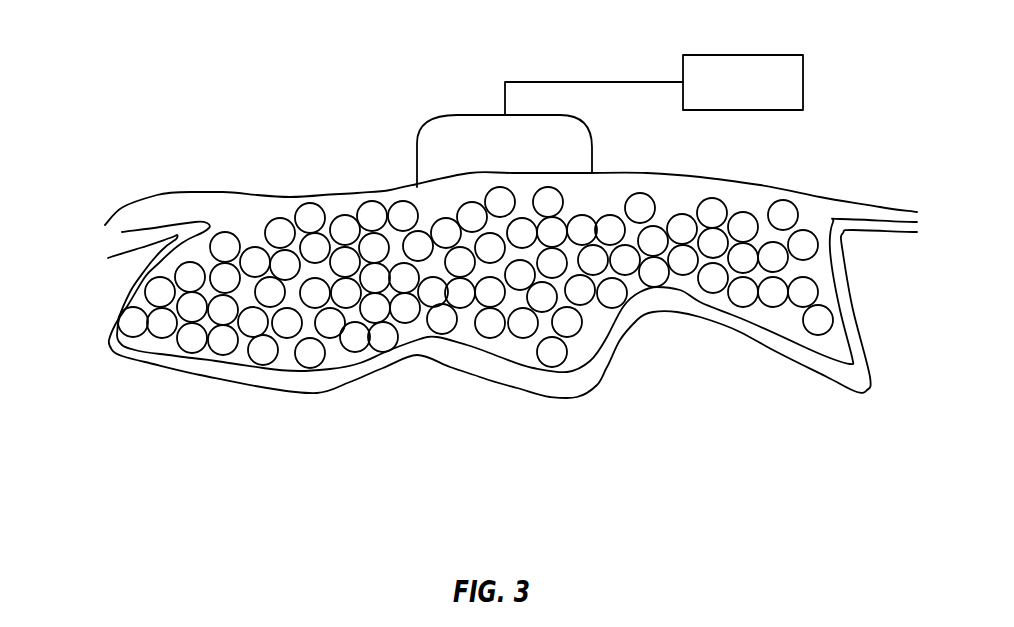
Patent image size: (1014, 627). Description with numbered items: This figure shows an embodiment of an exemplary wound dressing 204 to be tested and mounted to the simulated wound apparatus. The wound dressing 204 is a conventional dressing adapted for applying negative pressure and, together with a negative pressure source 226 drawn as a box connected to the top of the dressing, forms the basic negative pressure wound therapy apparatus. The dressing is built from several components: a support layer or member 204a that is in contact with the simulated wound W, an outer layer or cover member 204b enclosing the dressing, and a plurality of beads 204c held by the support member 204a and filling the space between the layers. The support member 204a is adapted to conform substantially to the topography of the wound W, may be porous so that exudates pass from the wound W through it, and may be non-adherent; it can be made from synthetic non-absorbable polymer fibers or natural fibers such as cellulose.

The wound dressing 204 is at (166, 182).
The support layer 204a is at (243, 368).
The outer layer 204b is at (327, 197).
The beads 204c is at (133, 330).
The negative pressure source 226 is at (764, 96).
The wound W is at (315, 392).